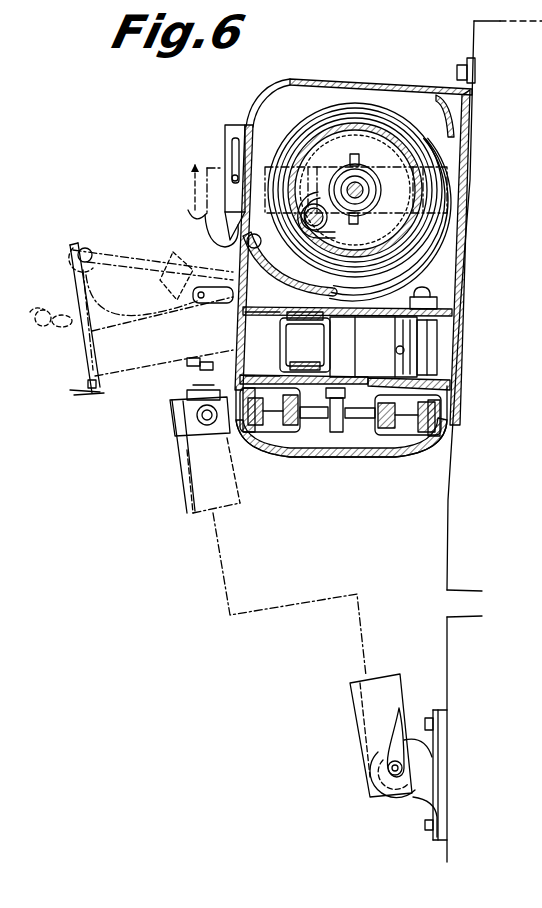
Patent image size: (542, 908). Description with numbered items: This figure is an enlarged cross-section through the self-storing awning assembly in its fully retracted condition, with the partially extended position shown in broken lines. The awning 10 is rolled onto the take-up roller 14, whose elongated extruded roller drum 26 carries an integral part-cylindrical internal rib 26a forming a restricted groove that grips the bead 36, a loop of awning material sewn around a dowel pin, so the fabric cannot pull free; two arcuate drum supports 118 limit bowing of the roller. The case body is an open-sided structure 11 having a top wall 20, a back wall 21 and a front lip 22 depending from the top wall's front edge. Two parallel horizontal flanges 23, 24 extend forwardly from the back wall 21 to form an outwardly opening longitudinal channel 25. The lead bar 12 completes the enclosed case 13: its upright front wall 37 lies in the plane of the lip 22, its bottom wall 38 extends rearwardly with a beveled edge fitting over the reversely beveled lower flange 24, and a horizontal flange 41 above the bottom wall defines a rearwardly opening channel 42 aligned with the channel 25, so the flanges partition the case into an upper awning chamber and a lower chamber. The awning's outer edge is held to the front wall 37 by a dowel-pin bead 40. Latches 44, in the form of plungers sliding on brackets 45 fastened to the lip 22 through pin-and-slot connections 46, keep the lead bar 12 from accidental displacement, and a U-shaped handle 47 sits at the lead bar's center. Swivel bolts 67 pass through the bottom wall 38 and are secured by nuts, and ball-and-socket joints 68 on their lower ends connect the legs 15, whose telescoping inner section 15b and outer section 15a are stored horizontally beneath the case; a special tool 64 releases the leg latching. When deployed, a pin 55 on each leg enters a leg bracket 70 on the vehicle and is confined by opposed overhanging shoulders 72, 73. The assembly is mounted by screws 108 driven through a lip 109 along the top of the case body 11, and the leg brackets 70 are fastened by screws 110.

The awning 10 is at (452, 220).
The open-sided structure 11 is at (474, 170).
The lead bar 12 is at (73, 283).
The enclosed case 13 is at (274, 71).
The take-up roller 14 is at (380, 125).
The legs 15 is at (377, 468).
The track roller carriage 15a is at (338, 455).
The telescoping inner section 15b is at (283, 452).
The top wall 20 is at (350, 80).
The back wall 21 is at (462, 232).
The front lip 22 is at (300, 88).
The horizontal flange 23 is at (452, 300).
The lower flange 24 is at (437, 380).
The longitudinal channel 25 is at (440, 347).
The roller drum 26 is at (445, 122).
The part-cylindrical internal rib 26a is at (356, 180).
The bead 36 is at (338, 224).
The front wall 37 is at (72, 334).
The bottom wall 38 is at (88, 435).
The bead 40 is at (283, 258).
The horizontal flange 41 is at (287, 344).
The rearwardly opening channel 42 is at (187, 362).
The latches 44 is at (181, 192).
The brackets 45 is at (233, 125).
The pin-and-slot connections 46 is at (225, 153).
The U-shaped handle 47 is at (204, 300).
The pin 55 is at (402, 712).
The special tool 64 is at (157, 280).
The swivel bolts 67 is at (175, 397).
The ball-and-socket joints 68 is at (193, 432).
The leg brackets 70 is at (397, 803).
The overhanging shoulder 72 is at (410, 743).
The overhanging shoulder 73 is at (388, 755).
The screws 108 is at (459, 56).
The lip 109 is at (472, 77).
The screws 110 is at (433, 713).
The arcuate drum supports 118 is at (220, 233).